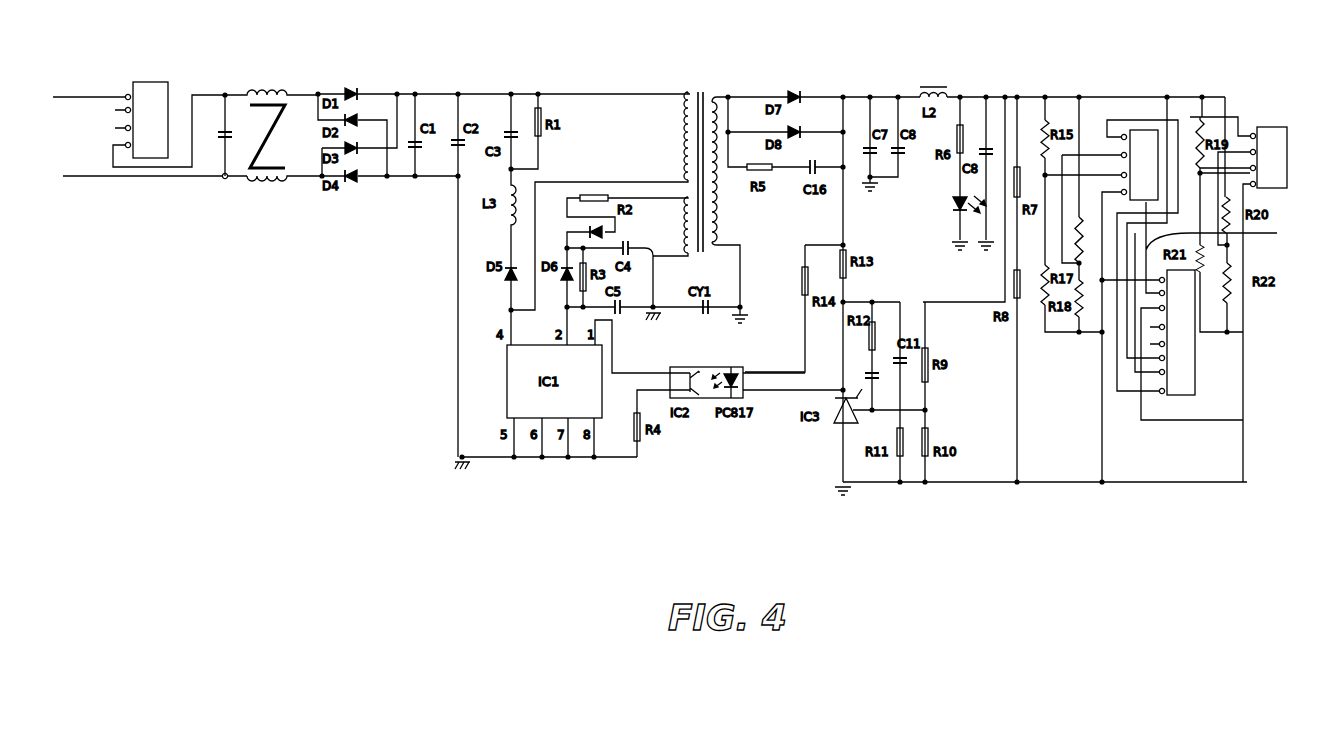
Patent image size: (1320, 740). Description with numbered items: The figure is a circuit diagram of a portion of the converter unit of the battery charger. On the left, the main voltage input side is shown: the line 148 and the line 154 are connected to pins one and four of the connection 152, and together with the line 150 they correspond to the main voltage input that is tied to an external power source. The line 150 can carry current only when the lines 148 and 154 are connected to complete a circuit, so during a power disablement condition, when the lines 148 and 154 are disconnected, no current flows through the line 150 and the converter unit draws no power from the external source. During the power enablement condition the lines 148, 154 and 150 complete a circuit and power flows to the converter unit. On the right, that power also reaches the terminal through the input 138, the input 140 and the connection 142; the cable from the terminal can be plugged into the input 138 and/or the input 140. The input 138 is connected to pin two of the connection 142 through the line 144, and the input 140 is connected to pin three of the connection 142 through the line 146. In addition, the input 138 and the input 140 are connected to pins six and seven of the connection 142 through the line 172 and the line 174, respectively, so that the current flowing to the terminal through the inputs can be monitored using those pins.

The input 138 is at (1143, 130).
The input 140 is at (1258, 127).
The connection 142 is at (1197, 386).
The line 144 is at (1230, 247).
The line 146 is at (1165, 420).
The line 148 is at (82, 97).
The line 150 is at (115, 177).
The connection 152 is at (172, 96).
The line 154 is at (112, 157).
The line 172 is at (1180, 118).
The line 174 is at (1212, 117).